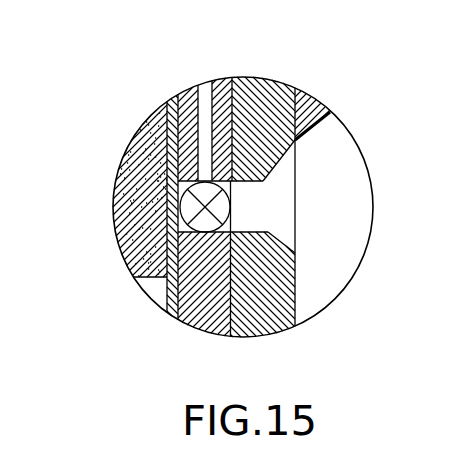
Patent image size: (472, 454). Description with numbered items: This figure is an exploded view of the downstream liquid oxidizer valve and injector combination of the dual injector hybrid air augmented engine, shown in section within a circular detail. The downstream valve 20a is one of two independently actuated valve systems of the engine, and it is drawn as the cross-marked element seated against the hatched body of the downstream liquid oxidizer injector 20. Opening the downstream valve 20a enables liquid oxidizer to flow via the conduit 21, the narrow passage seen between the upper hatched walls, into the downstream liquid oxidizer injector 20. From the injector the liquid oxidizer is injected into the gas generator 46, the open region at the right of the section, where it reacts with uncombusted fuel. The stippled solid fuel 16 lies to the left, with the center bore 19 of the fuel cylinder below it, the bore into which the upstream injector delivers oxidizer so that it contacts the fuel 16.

The fuel 16 is at (142, 153).
The center bore 19 is at (150, 285).
The downstream liquid oxidizer injector 20 is at (260, 202).
The downstream valve 20a is at (187, 202).
The conduit 21 is at (208, 103).
The gas generator 46 is at (332, 192).